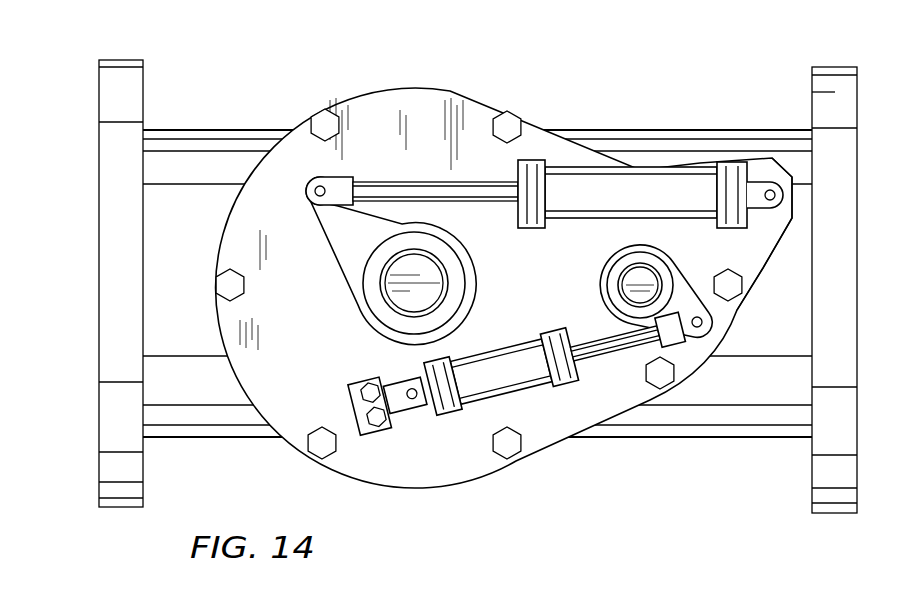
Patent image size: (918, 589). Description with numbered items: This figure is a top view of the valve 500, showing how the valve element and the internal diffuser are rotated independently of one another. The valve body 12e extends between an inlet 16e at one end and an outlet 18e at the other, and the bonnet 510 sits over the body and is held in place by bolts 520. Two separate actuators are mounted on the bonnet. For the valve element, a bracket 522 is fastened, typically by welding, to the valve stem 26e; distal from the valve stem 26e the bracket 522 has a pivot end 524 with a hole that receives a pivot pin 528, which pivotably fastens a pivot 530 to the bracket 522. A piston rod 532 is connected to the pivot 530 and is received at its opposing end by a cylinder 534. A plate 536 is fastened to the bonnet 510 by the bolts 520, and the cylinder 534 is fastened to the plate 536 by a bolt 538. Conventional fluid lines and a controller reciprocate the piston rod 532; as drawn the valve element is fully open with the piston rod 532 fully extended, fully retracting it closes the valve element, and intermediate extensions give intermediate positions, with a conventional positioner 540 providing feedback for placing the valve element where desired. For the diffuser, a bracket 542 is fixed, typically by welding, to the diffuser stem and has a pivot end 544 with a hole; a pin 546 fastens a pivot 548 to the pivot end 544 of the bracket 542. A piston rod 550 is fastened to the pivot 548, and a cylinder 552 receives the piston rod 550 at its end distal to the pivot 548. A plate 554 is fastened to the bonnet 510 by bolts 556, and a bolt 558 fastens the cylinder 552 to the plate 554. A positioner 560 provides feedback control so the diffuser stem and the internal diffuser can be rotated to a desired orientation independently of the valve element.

The valve 500 is at (227, 55).
The valve body 12e is at (209, 128).
The inlet 16e is at (97, 211).
The outlet 18e is at (858, 129).
The bonnet 510 is at (398, 88).
The bolts 520 is at (492, 456).
The bracket 522 is at (343, 264).
The pivot end 524 is at (319, 204).
The valve stem 26e is at (448, 273).
The pivot pin 528 is at (334, 177).
The pivot 530 is at (346, 179).
The piston rod 532 is at (458, 182).
The cylinder 534 is at (585, 184).
The plate 536 is at (759, 265).
The bolt 538 is at (767, 183).
The positioner 540 is at (361, 308).
The bracket 542 is at (631, 254).
The pivot end 544 is at (717, 314).
The pin 546 is at (698, 331).
The pivot 548 is at (678, 341).
The piston rod 550 is at (606, 408).
The cylinder 552 is at (502, 348).
The plate 554 is at (353, 380).
The bolts 556 is at (351, 397).
The bolt 558 is at (411, 408).
The positioner 560 is at (605, 285).